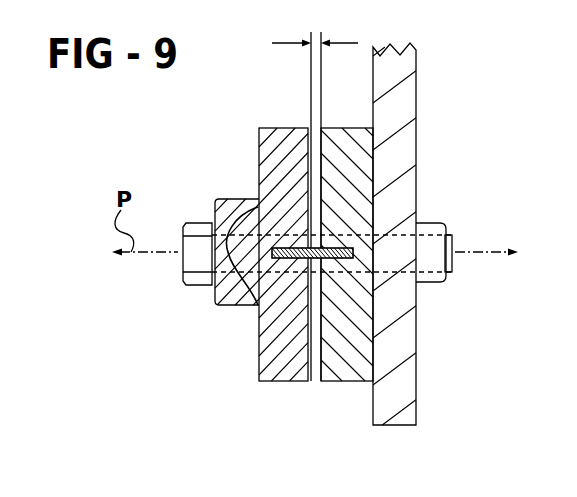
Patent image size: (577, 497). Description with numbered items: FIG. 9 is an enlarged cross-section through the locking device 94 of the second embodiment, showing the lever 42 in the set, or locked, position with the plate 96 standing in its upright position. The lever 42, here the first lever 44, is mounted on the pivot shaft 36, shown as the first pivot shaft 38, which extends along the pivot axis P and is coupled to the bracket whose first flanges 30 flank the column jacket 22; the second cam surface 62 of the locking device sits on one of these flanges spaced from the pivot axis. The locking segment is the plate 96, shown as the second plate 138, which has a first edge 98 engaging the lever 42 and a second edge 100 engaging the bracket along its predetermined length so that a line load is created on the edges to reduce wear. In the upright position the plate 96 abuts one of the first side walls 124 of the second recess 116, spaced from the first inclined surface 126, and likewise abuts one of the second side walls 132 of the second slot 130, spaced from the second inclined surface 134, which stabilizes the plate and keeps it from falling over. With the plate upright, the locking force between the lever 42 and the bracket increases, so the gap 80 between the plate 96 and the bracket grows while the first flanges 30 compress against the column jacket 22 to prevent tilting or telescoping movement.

The column jacket 22 is at (405, 102).
The first flanges 30 is at (352, 142).
The pivot shaft 36 is at (187, 167).
The first pivot shaft 38 is at (284, 240).
The lever 42 is at (198, 131).
The first lever 44 is at (265, 357).
The second cam surface 62 is at (213, 220).
The gap 80 is at (281, 43).
The locking device 94 is at (256, 398).
The plate 96 is at (190, 370).
The first edge 98 is at (214, 301).
The second edge 100 is at (355, 252).
The second recess 116 is at (274, 250).
The first side walls 124 is at (307, 247).
The first inclined surface 126 is at (275, 250).
The second slot 130 is at (340, 262).
The second side walls 132 is at (333, 246).
The second inclined surface 134 is at (336, 270).
The second plate 138 is at (322, 262).